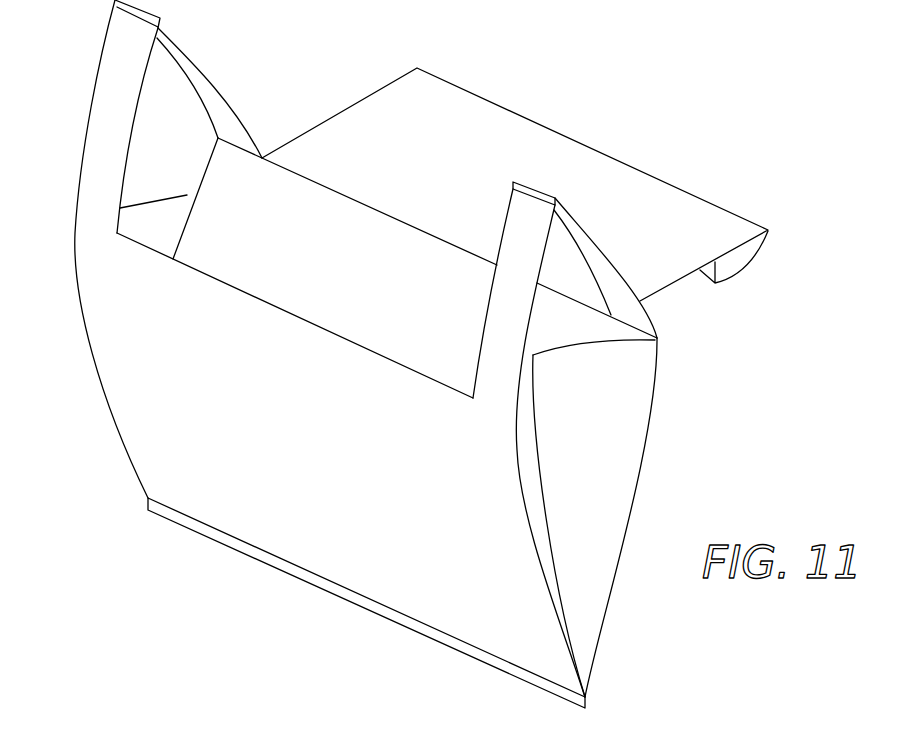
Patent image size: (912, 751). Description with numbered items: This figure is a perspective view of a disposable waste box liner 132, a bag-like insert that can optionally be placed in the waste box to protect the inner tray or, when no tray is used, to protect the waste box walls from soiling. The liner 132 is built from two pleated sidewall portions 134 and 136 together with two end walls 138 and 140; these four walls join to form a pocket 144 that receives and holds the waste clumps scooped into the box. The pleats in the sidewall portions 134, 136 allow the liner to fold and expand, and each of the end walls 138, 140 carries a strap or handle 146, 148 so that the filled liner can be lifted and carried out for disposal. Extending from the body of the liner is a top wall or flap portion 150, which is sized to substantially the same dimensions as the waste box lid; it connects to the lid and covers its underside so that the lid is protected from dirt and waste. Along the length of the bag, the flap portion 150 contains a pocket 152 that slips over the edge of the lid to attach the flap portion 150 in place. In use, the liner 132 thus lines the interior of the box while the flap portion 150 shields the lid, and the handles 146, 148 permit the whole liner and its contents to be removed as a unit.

The disposable waste box liner 132 is at (706, 405).
The pleated sidewall portion 134 is at (160, 223).
The pleated sidewall portion 136 is at (590, 453).
The end wall 138 is at (613, 627).
The end wall 140 is at (372, 535).
The pocket 144 is at (347, 221).
The strap or handle 146 is at (118, 72).
The strap or handle 148 is at (508, 300).
The top wall or flap portion 150 is at (455, 127).
The pocket 152 is at (733, 258).